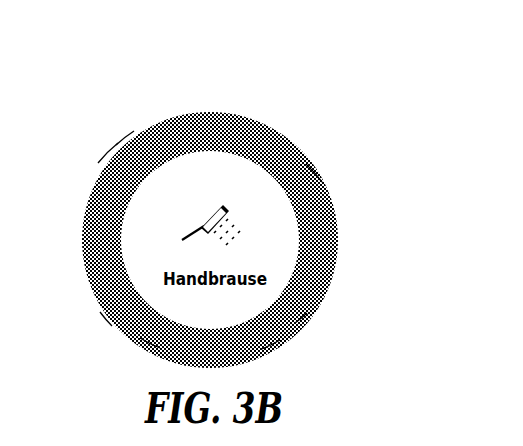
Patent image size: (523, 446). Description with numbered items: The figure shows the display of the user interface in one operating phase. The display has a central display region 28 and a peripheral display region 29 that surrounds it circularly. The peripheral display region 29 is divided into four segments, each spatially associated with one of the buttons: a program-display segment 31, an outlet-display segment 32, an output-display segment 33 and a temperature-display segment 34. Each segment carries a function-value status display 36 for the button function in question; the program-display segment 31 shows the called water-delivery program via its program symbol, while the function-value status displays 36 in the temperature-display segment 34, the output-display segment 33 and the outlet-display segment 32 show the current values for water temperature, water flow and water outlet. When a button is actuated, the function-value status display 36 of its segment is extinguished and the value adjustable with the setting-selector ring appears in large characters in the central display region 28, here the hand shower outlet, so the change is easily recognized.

The central display region 28 is at (208, 197).
The peripheral display region 29 is at (338, 233).
The program-display segment 31 is at (107, 170).
The outlet-display segment 32 is at (315, 175).
The output-display segment 33 is at (270, 340).
The temperature-display segment 34 is at (150, 342).
The function-value status display 36 is at (124, 150).